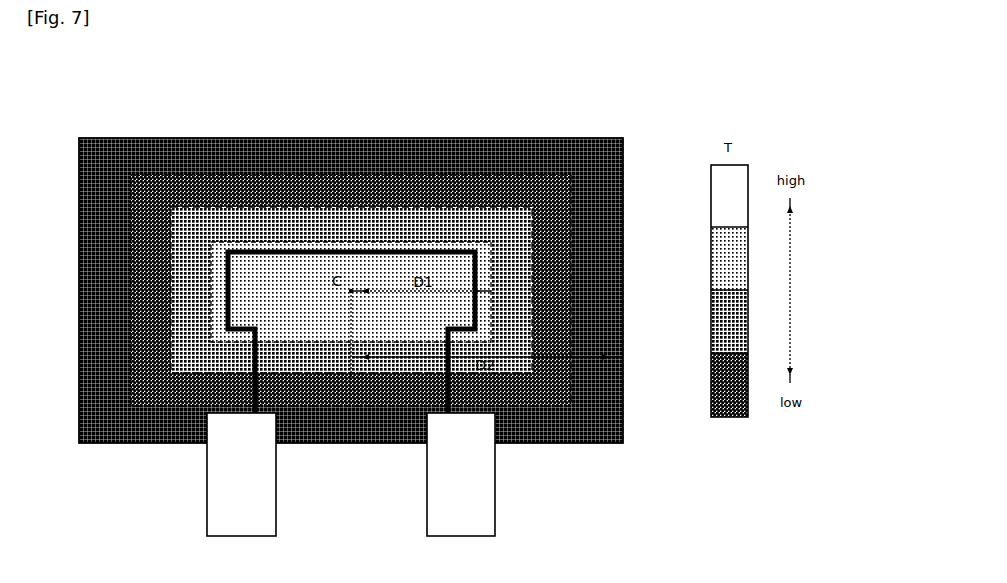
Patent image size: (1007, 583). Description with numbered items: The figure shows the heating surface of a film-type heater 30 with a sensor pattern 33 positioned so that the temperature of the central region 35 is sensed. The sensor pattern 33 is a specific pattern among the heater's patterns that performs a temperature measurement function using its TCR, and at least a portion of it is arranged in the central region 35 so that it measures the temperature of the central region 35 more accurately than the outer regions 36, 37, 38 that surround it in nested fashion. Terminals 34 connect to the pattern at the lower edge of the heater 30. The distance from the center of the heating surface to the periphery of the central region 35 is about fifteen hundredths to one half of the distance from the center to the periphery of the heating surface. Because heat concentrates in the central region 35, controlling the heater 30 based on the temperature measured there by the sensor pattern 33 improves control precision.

The heater 30 is at (467, 109).
The sensor pattern 33 is at (330, 250).
The terminal 34 is at (213, 490).
The central region 35 is at (253, 307).
The outer region 36 is at (183, 289).
The outer region 37 is at (145, 260).
The outer region 38 is at (79, 222).